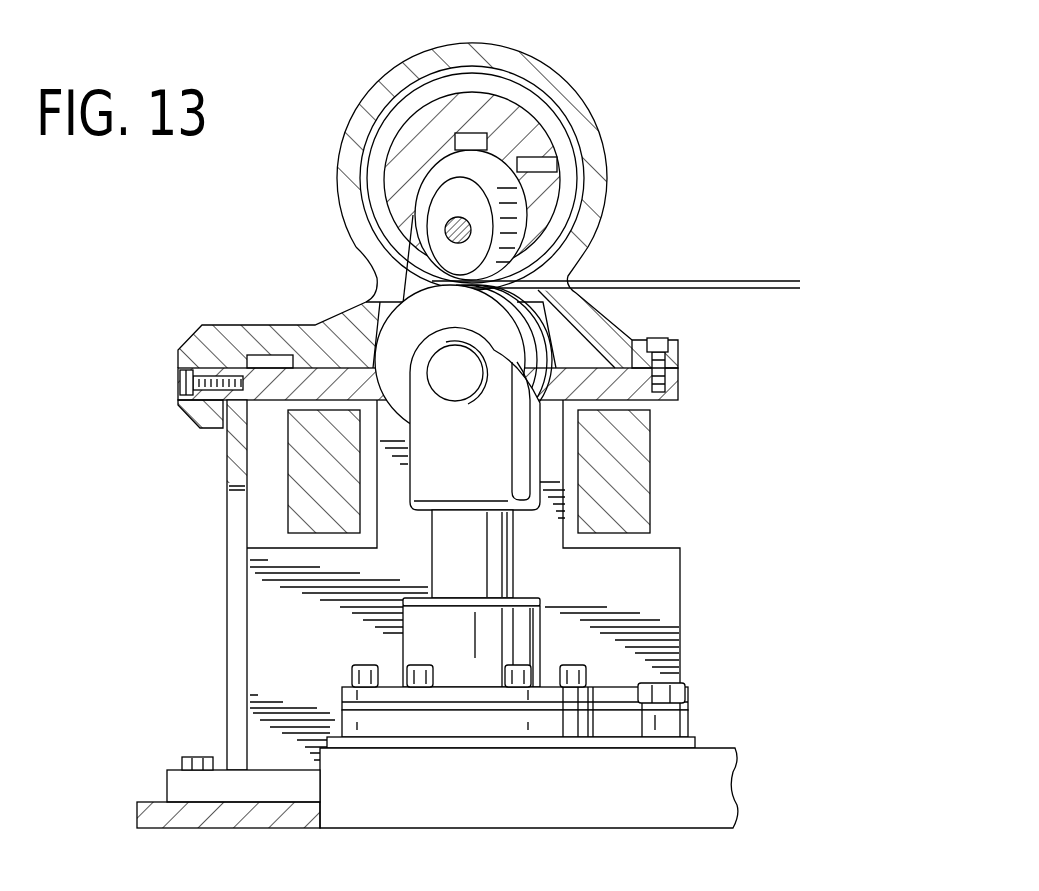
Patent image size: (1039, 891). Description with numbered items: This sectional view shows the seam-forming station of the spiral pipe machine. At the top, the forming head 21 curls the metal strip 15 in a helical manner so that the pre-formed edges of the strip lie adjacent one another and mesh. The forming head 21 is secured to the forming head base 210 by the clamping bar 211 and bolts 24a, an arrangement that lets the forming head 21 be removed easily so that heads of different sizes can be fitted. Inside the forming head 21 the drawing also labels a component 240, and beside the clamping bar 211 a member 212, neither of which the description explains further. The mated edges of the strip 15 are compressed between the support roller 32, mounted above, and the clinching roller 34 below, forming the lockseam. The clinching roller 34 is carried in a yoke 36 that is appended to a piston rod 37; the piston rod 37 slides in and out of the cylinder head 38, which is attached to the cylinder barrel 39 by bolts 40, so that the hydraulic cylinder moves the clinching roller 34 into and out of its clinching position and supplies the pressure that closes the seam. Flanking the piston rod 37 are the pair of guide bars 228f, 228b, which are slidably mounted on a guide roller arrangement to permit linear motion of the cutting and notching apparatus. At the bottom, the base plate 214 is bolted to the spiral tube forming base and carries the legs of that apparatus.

The forming head 21 is at (575, 108).
The roll core 240 is at (543, 160).
The support roller 32 is at (470, 207).
The metal strip 15 is at (706, 280).
The clamping bar 211 is at (279, 298).
The mounting plate 212 is at (679, 362).
The bolts 24a is at (180, 381).
The forming head base 210 is at (232, 452).
The guide bar 228f is at (298, 490).
The guide bar 228b is at (640, 497).
The clinching roller 34 is at (474, 323).
The yoke 36 is at (474, 467).
The piston rod 37 is at (477, 565).
The cylinder head 38 is at (466, 645).
The cylinder barrel 39 is at (500, 803).
The bolts 40 is at (576, 665).
The base plate 214 is at (145, 779).